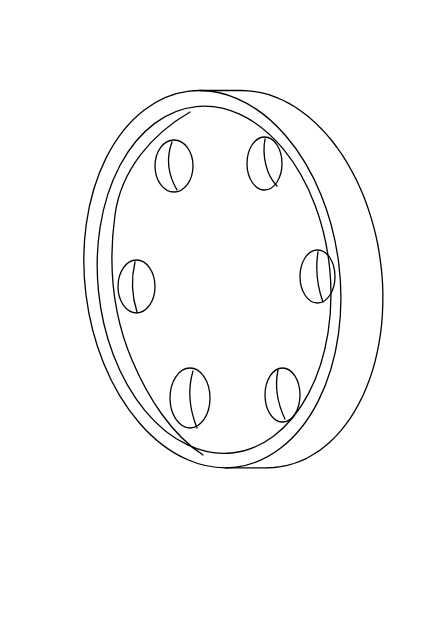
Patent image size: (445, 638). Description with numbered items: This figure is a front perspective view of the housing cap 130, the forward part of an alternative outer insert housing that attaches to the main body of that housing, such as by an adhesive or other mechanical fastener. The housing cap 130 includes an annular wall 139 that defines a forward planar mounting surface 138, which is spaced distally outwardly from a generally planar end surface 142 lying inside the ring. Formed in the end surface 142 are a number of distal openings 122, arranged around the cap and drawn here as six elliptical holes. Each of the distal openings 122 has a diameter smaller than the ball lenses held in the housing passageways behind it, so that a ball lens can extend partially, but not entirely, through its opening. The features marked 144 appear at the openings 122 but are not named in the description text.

The housing cap 130 is at (286, 63).
The forward planar mounting surface 138 is at (173, 112).
The annular wall 139 is at (103, 168).
The end surface 142 is at (196, 313).
The distal openings 122 is at (177, 192).
The aperture walls 144 is at (276, 191).